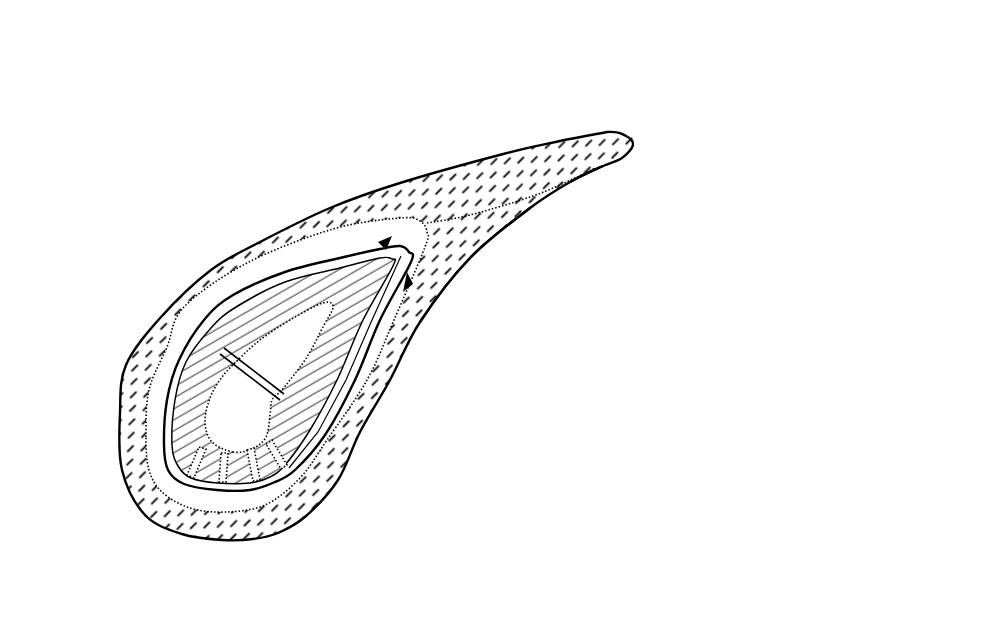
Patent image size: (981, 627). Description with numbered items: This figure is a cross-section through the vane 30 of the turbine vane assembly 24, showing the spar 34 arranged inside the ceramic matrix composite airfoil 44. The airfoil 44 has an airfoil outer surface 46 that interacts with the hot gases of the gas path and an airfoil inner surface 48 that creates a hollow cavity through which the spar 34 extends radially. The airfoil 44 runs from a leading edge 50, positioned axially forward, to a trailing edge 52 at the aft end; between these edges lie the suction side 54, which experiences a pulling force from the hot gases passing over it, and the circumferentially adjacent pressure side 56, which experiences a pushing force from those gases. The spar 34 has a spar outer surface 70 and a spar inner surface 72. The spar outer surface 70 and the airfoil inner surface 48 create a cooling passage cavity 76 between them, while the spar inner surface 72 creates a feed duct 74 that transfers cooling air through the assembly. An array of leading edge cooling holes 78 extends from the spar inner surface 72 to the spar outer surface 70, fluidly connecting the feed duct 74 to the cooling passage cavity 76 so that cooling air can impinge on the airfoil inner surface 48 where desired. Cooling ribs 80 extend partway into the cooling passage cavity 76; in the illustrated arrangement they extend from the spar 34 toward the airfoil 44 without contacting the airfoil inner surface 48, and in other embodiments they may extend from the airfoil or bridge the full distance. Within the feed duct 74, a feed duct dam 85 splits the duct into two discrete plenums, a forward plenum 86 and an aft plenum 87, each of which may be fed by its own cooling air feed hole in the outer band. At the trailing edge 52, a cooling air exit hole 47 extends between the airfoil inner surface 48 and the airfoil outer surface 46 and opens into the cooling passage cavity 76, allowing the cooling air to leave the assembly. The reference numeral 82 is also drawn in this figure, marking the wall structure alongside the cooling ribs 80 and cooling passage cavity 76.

The turbine vane assembly 24 is at (732, 148).
The vane 30 is at (643, 118).
The spar 34 is at (343, 254).
The ceramic matrix composite airfoil 44 is at (592, 119).
The airfoil outer surface 46 is at (503, 224).
The cooling air exit hole 47 is at (543, 199).
The airfoil inner surface 48 is at (464, 257).
The leading edge 50 is at (161, 527).
The trailing edge 52 is at (637, 143).
The suction side 54 is at (253, 238).
The pressure side 56 is at (413, 347).
The spar outer surface 70 is at (257, 421).
The spar inner surface 72 is at (264, 371).
The feed duct 74 is at (244, 413).
The cooling passage cavity 76 is at (161, 433).
The leading edge cooling holes 78 is at (222, 482).
The cooling ribs 80 is at (223, 306).
The channel wall 82 is at (248, 293).
The feed duct dam 85 is at (283, 387).
The forward plenum 86 is at (262, 487).
The aft plenum 87 is at (283, 472).